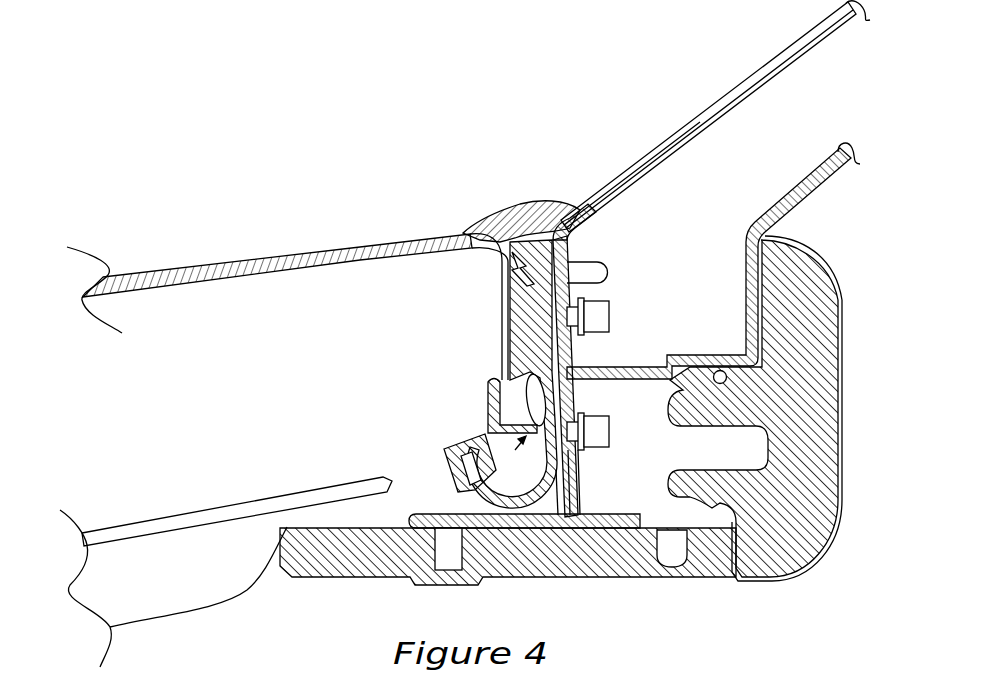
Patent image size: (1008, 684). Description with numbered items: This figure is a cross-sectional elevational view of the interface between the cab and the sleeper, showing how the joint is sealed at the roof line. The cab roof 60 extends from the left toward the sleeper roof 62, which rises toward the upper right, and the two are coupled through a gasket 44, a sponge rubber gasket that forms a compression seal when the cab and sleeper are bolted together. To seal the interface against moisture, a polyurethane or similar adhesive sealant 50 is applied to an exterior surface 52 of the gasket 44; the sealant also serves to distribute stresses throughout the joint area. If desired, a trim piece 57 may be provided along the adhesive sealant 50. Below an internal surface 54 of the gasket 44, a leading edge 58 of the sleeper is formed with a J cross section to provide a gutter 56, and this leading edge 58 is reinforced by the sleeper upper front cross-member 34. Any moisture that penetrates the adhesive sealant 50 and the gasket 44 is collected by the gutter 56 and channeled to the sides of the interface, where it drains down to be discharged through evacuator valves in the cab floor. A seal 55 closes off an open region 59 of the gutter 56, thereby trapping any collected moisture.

The cab roof 60 is at (290, 255).
The trim piece 57 is at (500, 214).
The sleeper roof 62 is at (727, 96).
The sleeper upper front cross-member 34 is at (598, 265).
The adhesive sealant 50 is at (525, 328).
The exterior surface 52 is at (531, 365).
The seal 55 is at (498, 430).
The leading edge 58 is at (442, 448).
The gutter 56 is at (520, 494).
The gasket 44 is at (572, 417).
The internal surface 54 is at (572, 460).
The open region 59 is at (572, 488).